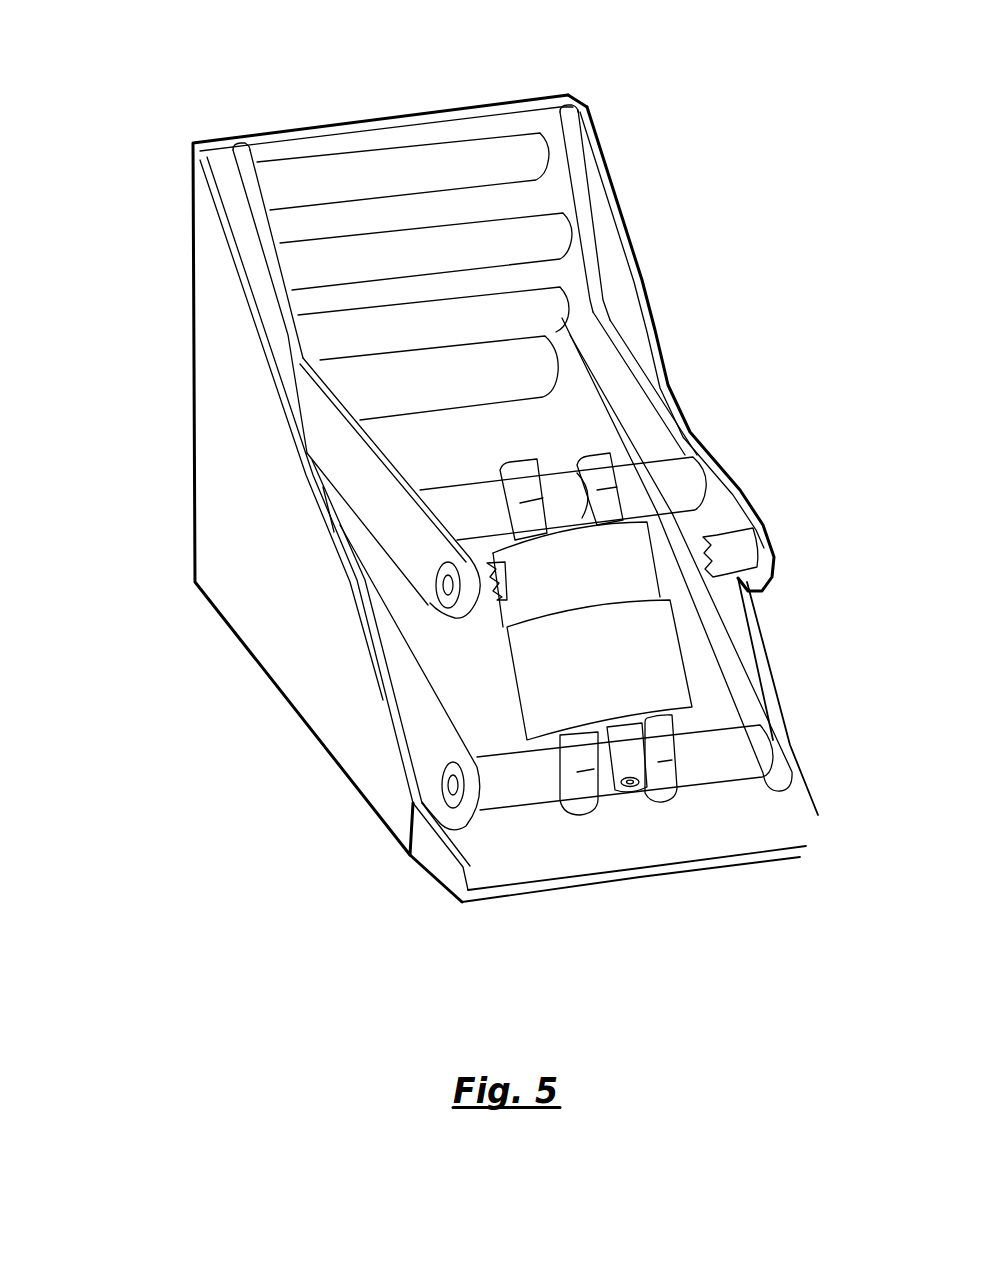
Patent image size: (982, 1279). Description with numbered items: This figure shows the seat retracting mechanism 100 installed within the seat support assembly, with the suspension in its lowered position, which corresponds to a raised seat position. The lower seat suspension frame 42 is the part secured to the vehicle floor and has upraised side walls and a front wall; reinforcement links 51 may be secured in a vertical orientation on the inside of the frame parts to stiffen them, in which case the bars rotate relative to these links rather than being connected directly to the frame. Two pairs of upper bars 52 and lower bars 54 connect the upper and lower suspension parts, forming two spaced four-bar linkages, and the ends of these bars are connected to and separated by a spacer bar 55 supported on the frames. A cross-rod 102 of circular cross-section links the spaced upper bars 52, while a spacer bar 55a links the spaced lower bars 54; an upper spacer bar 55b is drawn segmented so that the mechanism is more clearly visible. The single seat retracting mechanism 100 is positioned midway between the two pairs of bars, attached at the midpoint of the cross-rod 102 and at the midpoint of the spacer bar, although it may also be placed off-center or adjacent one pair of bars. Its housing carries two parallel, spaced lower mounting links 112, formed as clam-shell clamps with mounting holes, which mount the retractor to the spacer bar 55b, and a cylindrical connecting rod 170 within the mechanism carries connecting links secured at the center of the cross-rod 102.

The lower seat suspension frame 42 is at (194, 494).
The reinforcement link 51 is at (213, 153).
The upper bar 52 is at (389, 470).
The lower bar 54 is at (449, 728).
The spacer bar 55 is at (428, 181).
The spacer bar 55a is at (723, 757).
The upper spacer bar 55b is at (500, 590).
The seat retracting mechanism 100 is at (610, 589).
The cross-rod 102 is at (683, 485).
The lower mounting link 112 is at (586, 794).
The connecting rod 170 is at (633, 562).